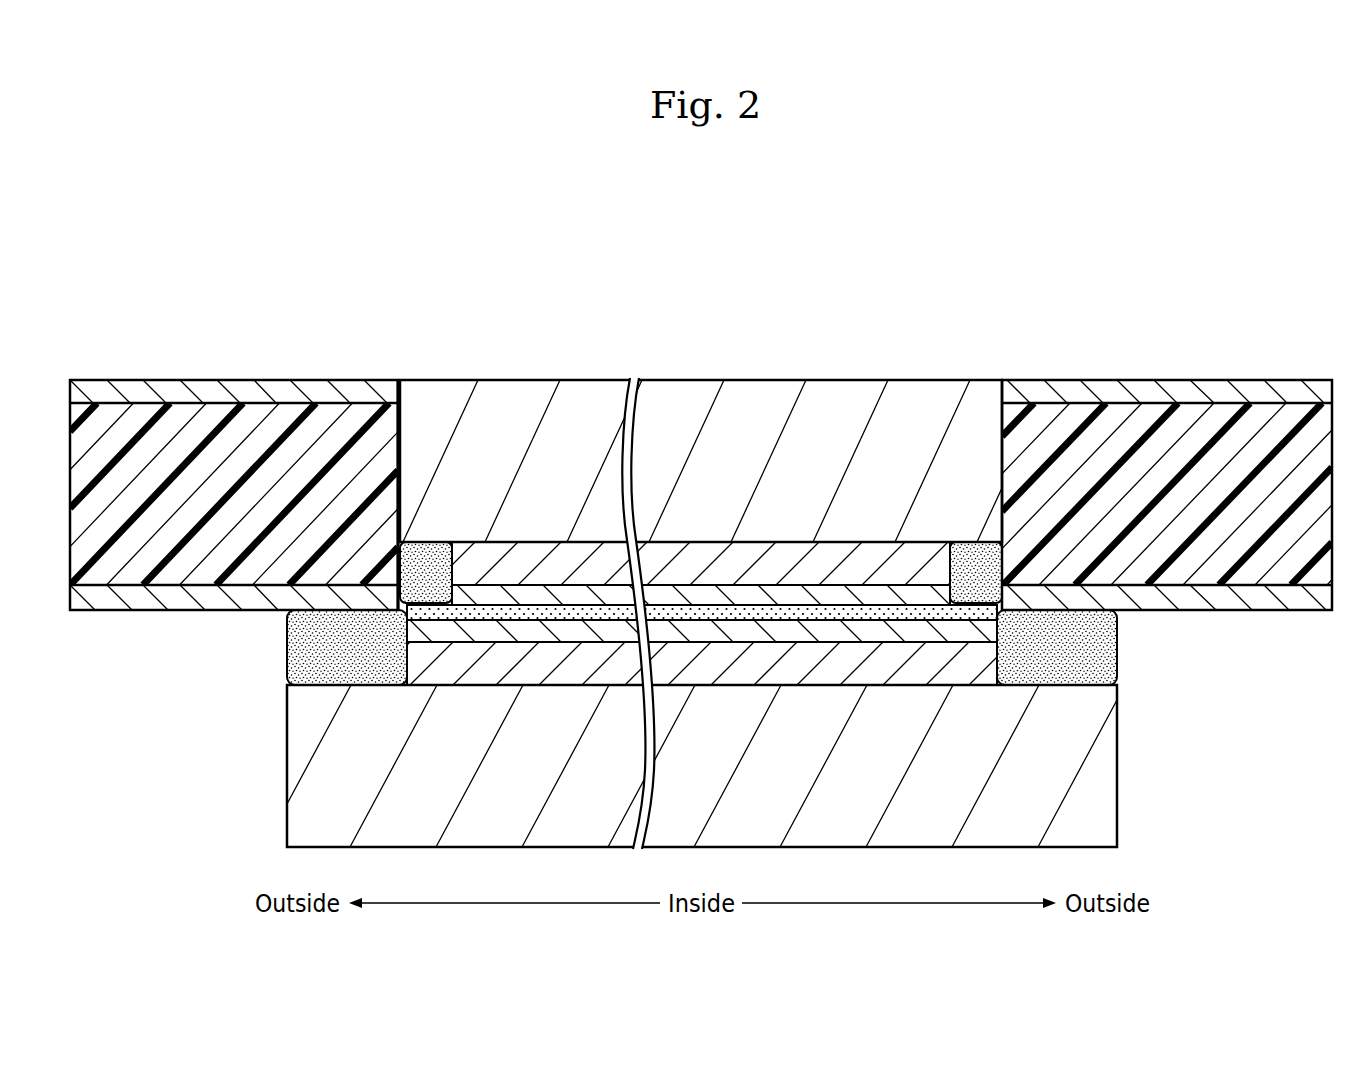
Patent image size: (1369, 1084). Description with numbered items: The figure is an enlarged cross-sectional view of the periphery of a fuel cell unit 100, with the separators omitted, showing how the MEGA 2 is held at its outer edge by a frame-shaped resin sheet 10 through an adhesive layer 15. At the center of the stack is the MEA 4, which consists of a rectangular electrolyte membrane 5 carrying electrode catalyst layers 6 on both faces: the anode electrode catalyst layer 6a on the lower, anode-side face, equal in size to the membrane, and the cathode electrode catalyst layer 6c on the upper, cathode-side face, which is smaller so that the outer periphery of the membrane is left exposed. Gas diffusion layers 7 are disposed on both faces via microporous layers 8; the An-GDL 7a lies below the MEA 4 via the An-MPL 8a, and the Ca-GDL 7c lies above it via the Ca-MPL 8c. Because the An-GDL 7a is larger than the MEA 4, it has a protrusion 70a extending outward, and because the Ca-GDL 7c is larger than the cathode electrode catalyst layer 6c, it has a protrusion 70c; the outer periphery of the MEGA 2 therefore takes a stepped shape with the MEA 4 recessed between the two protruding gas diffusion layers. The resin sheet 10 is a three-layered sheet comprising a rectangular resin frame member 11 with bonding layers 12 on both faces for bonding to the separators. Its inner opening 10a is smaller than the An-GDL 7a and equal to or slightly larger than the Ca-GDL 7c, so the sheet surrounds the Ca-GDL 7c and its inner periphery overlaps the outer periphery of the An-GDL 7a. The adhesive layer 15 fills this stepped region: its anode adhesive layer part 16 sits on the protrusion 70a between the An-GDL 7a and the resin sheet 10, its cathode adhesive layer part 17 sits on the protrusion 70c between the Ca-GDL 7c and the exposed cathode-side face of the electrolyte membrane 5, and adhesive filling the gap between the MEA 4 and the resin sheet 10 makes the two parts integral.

The fuel cell unit 100 is at (1278, 227).
The MEGA 2 is at (659, 537).
The MEA 4 is at (702, 455).
The electrolyte membrane 5 is at (820, 612).
The electrode catalyst layer 6 is at (702, 474).
The cathode electrode catalyst layer 6c is at (777, 595).
The anode electrode catalyst layer 6a is at (862, 630).
The gas diffusion layer 7 is at (659, 557).
The Ca-GDL 7c is at (701, 405).
The An-GDL 7a is at (659, 557).
The microporous layer 8 is at (702, 476).
The Ca-MPL 8c is at (695, 553).
The An-MPL 8a is at (905, 660).
The resin sheet 10 is at (701, 442).
The inner opening 10a is at (408, 440).
The frame member 11 is at (232, 460).
The bonding layer 12 is at (173, 600).
The adhesive layer 15 is at (636, 632).
The anode adhesive layer part 16 is at (307, 652).
The cathode adhesive layer part 17 is at (418, 572).
The protrusion 70a is at (318, 775).
The protrusion 70c is at (432, 395).